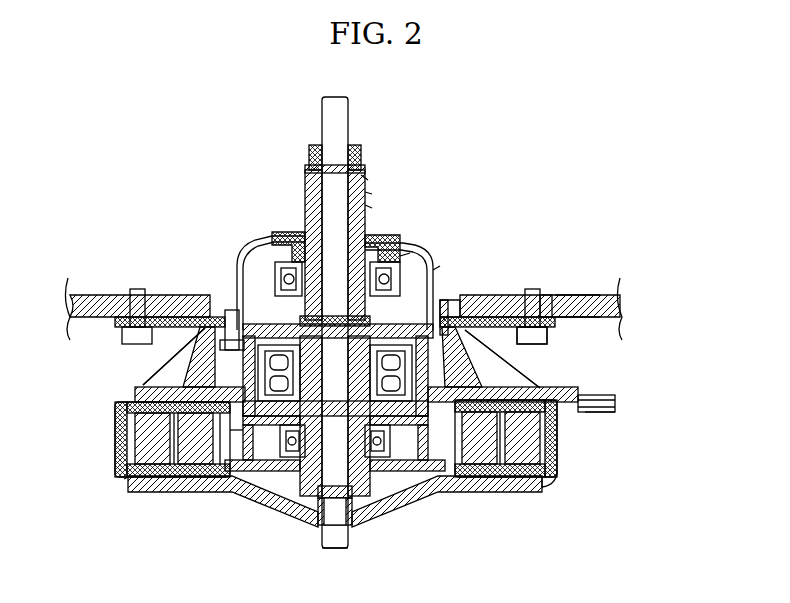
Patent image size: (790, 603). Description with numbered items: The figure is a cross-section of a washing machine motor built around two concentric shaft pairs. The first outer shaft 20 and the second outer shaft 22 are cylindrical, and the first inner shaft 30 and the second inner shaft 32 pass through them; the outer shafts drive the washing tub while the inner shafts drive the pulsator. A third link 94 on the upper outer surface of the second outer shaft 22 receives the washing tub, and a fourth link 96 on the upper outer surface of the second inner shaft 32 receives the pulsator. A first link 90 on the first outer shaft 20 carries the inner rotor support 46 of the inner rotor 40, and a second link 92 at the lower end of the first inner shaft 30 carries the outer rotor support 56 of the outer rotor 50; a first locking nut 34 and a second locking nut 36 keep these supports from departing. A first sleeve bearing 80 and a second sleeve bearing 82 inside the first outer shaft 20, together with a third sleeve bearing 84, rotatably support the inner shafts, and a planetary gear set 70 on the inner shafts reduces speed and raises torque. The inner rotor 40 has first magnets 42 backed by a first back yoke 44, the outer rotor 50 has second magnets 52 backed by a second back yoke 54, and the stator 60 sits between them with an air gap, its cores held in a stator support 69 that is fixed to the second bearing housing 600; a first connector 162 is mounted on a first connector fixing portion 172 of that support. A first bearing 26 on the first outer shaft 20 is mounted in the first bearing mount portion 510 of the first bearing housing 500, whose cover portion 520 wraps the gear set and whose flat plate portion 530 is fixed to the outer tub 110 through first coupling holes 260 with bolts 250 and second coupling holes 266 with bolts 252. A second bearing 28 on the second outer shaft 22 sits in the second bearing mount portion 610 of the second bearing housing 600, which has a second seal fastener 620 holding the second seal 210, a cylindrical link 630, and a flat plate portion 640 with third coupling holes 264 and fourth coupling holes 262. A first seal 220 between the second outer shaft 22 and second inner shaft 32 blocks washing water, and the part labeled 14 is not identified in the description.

The fourth link 96 is at (349, 108).
The first seal 220 is at (361, 152).
The second inner shaft 32 is at (305, 187).
The second sleeve bearing 82 is at (367, 183).
The third link 94 is at (372, 194).
The second outer shaft 22 is at (372, 208).
The second bearing mount portion 610 is at (238, 262).
The second bearing housing 600 is at (438, 252).
The second seal fastener 620 is at (283, 236).
The second bearing 28 is at (277, 266).
The second seal 210 is at (410, 253).
The casing wall 14 is at (440, 266).
The third sleeve bearing 84 is at (433, 290).
The bolts 250 is at (448, 305).
The first outer shaft 20 is at (400, 470).
The first link 90 is at (285, 478).
The second link 92 is at (305, 492).
The first inner shaft 30 is at (300, 508).
The first locking nut 34 is at (352, 495).
The first sleeve bearing 80 is at (335, 530).
The second locking nut 36 is at (350, 527).
The outer tub 110 is at (610, 300).
The link 630 is at (160, 318).
The first coupling holes 260 is at (500, 327).
The flat plate portion 640 is at (140, 289).
The planetary gear set 70 is at (226, 320).
The third coupling holes 264 is at (470, 297).
The flat plate portion 530 is at (546, 295).
The bolts 252 is at (575, 295).
The fourth coupling holes 262 is at (570, 317).
The second coupling holes 266 is at (547, 338).
The stator support 69 is at (500, 360).
The first bearing 26 is at (140, 388).
The first connector 162 is at (615, 398).
The first connector fixing portion 172 is at (615, 408).
The outer rotor 50 is at (115, 422).
The second magnets 52 is at (130, 428).
The second back yoke 54 is at (130, 462).
The first magnets 42 is at (135, 470).
The outer rotor support 56 is at (124, 479).
The first back yoke 44 is at (160, 492).
The inner rotor 40 is at (210, 492).
The inner rotor support 46 is at (238, 495).
The first bearing housing 500 is at (557, 460).
The cover portion 520 is at (557, 430).
The first bearing mount portion 510 is at (470, 480).
The stator 60 is at (542, 490).